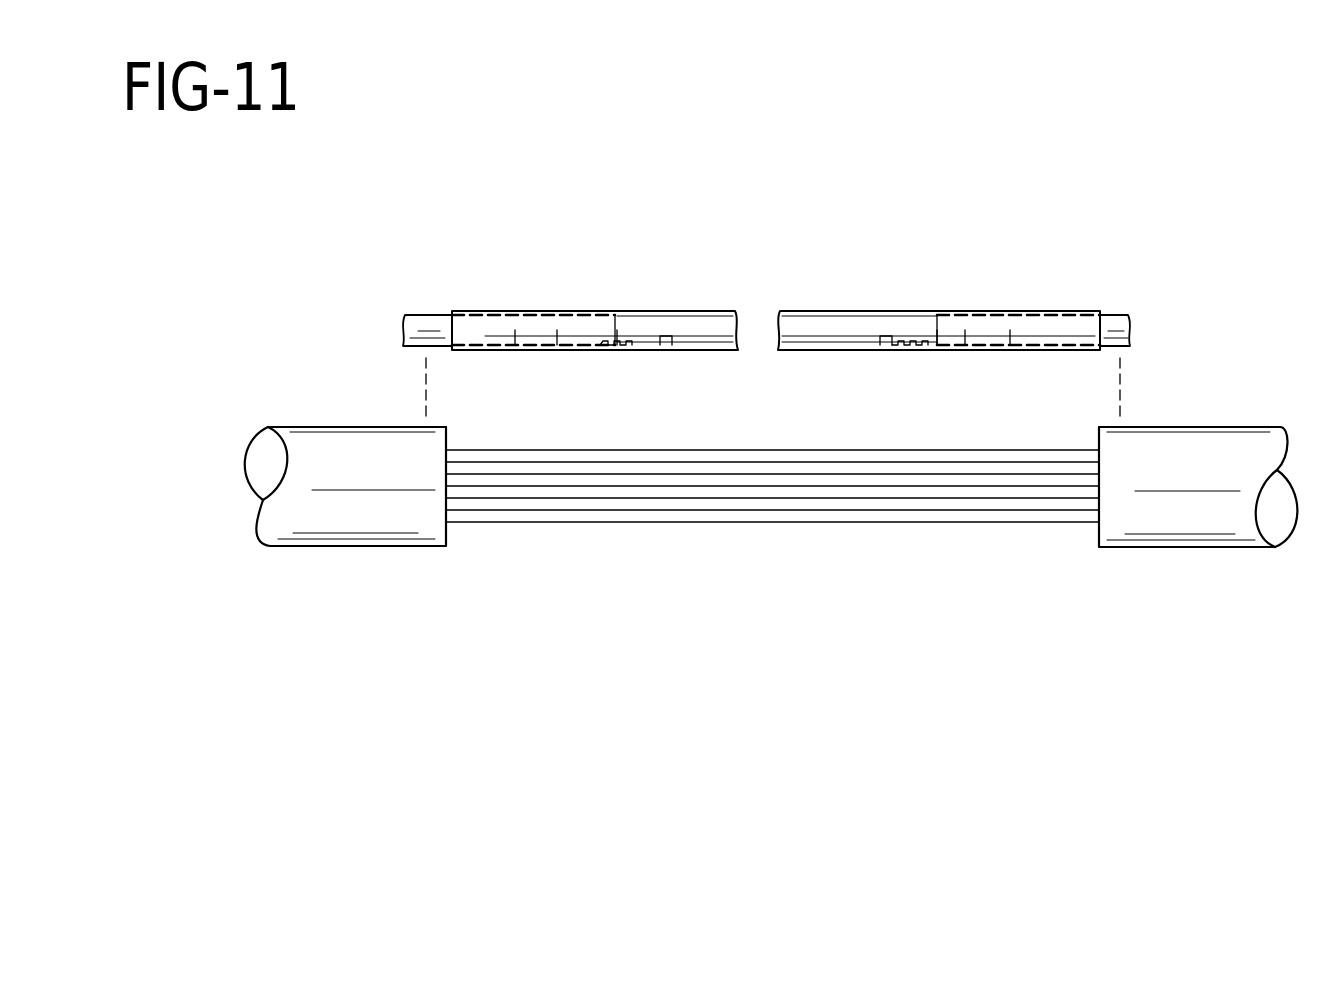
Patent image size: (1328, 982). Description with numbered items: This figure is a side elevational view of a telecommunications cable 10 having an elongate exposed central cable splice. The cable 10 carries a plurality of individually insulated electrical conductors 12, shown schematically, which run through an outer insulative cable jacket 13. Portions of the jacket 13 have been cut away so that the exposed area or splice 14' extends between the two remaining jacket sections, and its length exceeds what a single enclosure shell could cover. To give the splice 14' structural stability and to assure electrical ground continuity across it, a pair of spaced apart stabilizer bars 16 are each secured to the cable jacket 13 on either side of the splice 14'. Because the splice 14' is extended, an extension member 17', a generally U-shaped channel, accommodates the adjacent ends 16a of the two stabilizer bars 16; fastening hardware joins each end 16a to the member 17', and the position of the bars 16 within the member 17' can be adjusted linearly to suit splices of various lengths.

The telecommunications cable 10 is at (1045, 655).
The electrical conductors 12 is at (553, 502).
The cable jacket 13 is at (334, 446).
The splice 14' is at (773, 389).
The stabilizer bar 16 is at (427, 324).
The ends of stabilizer bars 16a is at (576, 332).
The extension member 17' is at (776, 298).